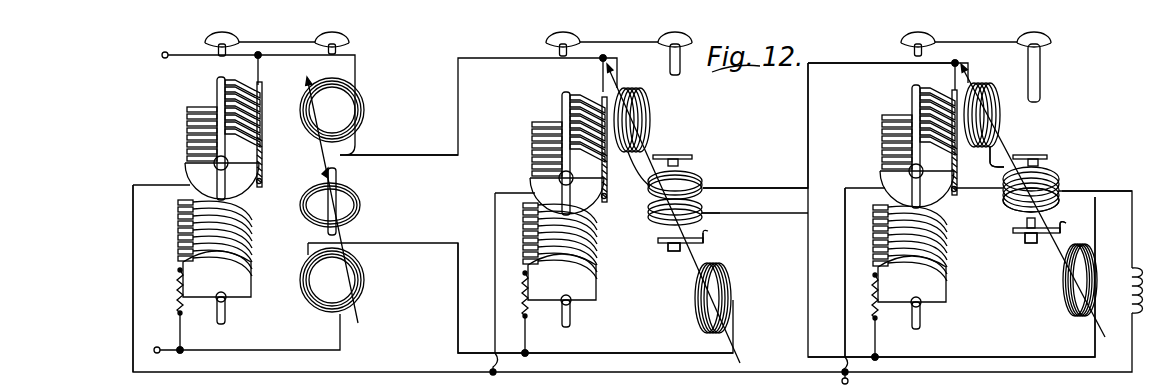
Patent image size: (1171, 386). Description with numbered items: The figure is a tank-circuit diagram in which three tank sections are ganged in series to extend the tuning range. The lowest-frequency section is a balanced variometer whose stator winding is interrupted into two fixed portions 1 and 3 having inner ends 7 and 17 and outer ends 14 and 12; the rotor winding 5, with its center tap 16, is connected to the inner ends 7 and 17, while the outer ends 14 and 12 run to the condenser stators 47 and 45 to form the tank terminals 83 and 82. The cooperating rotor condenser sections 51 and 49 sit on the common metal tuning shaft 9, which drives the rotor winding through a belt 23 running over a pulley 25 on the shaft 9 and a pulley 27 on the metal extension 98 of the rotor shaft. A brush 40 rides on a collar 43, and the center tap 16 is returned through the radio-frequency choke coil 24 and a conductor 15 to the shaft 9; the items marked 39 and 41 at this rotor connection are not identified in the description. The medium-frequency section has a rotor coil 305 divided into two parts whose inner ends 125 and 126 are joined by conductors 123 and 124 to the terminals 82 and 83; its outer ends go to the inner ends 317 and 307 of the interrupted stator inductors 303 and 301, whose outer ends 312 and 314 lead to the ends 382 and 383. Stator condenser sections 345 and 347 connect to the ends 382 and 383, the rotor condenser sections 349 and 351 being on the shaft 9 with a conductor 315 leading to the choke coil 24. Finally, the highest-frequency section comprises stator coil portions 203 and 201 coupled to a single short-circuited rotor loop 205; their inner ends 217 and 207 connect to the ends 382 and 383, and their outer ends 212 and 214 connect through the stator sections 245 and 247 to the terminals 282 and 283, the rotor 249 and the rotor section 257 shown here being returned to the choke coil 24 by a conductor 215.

The stator inductor-winding portion 1 is at (1094, 251).
The stator inductor-winding portion 3 is at (1000, 110).
The rotor winding 5 is at (1003, 200).
The inner end 7 is at (1070, 226).
The rotor metal tuning shaft 9 is at (215, 80).
The outer end 12 is at (853, 55).
The outer end 14 is at (989, 352).
The conductor 15 is at (845, 245).
The center tap 16 is at (1062, 192).
The inner end 17 is at (992, 160).
The belt 23 is at (285, 45).
The radio-frequency choke coil 24 is at (1146, 285).
The pulley 25 is at (204, 38).
The pulley 27 is at (350, 42).
The contact plate 39 is at (672, 160).
The brush 40 is at (660, 241).
The conductor 41 is at (648, 190).
The collar 43 is at (682, 248).
The stationary-condenser plate section 45 is at (947, 101).
The stationary-condenser plate section 47 is at (882, 250).
The rotary-condenser plate section 49 is at (886, 152).
The rotary-condenser plate section 51 is at (935, 286).
The terminal 82 is at (960, 59).
The terminal 83 is at (896, 357).
The metal extension 98 is at (1041, 84).
The conductor 123 is at (757, 187).
The conductor 124 is at (770, 195).
The inner end 125 is at (705, 180).
The inner end 126 is at (702, 213).
The stator inductor-winding portion 201 is at (362, 293).
The stator inductor-winding portion 203 is at (366, 100).
The rotor winding 205 is at (365, 205).
The inner end 207 is at (418, 243).
The outer end 212 is at (306, 73).
The outer end 214 is at (275, 347).
The conductor 215 is at (137, 245).
The inner end 217 is at (403, 152).
The stator section 245 is at (250, 120).
The stator section 247 is at (212, 318).
The rotor 249 is at (187, 122).
The rotor 257 is at (252, 212).
The terminal 282 is at (260, 57).
The terminal 283 is at (183, 352).
The stator inductor 301 is at (698, 316).
The stator inductor 303 is at (649, 105).
The medium-frequency rotor coil 305 is at (647, 213).
The inner end 307 is at (693, 258).
The outer end 312 is at (622, 70).
The outer end 314 is at (604, 352).
The conductor 315 is at (494, 224).
The inner end 317 is at (632, 183).
The stator condenser section 345 is at (584, 73).
The stator condenser section 347 is at (543, 322).
The rotor condenser section 349 is at (529, 152).
The rotor condenser section 351 is at (590, 280).
The end 382 is at (606, 57).
The end 383 is at (528, 354).